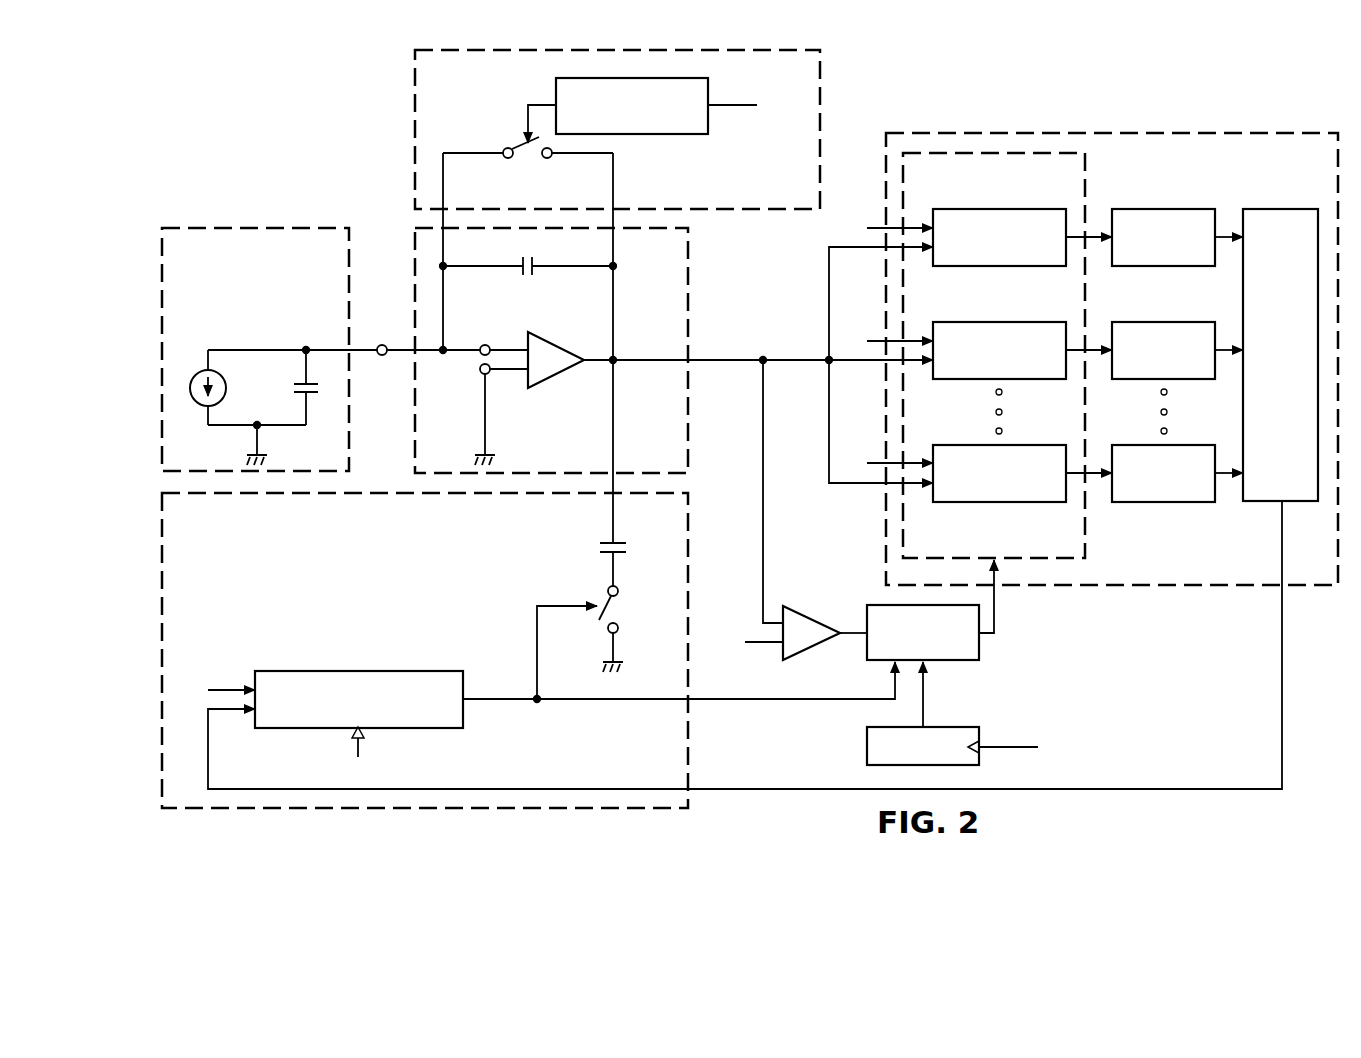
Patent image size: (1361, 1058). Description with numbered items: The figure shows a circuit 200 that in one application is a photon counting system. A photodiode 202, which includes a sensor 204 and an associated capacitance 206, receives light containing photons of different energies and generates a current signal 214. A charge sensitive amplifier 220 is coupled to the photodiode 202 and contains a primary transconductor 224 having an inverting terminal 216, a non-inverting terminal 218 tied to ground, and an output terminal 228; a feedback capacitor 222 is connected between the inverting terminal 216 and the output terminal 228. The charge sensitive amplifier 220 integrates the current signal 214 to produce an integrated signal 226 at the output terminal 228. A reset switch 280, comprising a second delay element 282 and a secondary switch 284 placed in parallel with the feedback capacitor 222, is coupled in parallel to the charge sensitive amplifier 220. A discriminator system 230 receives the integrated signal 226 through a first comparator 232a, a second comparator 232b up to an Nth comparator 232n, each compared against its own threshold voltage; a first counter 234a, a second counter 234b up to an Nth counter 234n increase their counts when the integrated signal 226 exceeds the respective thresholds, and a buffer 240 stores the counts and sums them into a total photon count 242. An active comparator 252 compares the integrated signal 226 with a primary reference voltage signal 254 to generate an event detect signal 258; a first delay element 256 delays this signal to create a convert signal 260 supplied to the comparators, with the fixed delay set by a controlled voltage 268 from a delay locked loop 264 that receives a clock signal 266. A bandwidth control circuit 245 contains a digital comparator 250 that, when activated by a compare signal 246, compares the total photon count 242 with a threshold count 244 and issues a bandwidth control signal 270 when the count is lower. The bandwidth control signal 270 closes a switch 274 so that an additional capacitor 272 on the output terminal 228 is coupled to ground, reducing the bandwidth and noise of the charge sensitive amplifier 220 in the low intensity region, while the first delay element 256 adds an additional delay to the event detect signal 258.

The circuit 200 is at (265, 124).
The photodiode 202 is at (258, 226).
The sensor 204 is at (190, 372).
The associated capacitance Cs 206 is at (292, 390).
The current signal Ic 214 is at (378, 357).
The inverting terminal 216 is at (483, 345).
The non-inverting terminal 218 is at (482, 376).
The charge sensitive amplifier (CSA) 220 is at (692, 304).
The feedback capacitor Cfb 222 is at (527, 278).
The primary transconductor 224 is at (556, 344).
The integrated signal VI 226 is at (727, 364).
The output terminal 228 is at (600, 364).
The discriminator system 230 is at (1115, 130).
The comparator1 232a is at (1000, 207).
The comparator2 232b is at (1000, 320).
The comparatorN 232n is at (1000, 504).
The counter1 234a is at (1165, 207).
The counter2 234b is at (1165, 320).
The counterN 234n is at (1165, 504).
The buffer 240 is at (1293, 207).
The total photon count 242 is at (1283, 650).
The threshold count TC 244 is at (222, 688).
The bandwidth control circuit 245 is at (692, 718).
The compare signal COMP 246 is at (356, 746).
The digital comparator 250 is at (345, 670).
The active comparator 252 is at (816, 616).
The primary reference voltage signal Vrefp 254 is at (765, 645).
The first delay element 256 is at (981, 657).
The event detect signal 258 is at (848, 638).
The convert signal CONV 260 is at (730, 103).
The delay locked loop (DLL) 264 is at (867, 757).
The clock signal CLK 266 is at (1010, 746).
The controlled voltage 268 is at (925, 695).
The bandwidth control signal 270 is at (487, 702).
The additional capacitor CA 272 is at (600, 548).
The switch S 274 is at (621, 595).
The reset switch 280 is at (413, 117).
The second delay element 282 is at (556, 100).
The secondary switch SS 284 is at (517, 160).